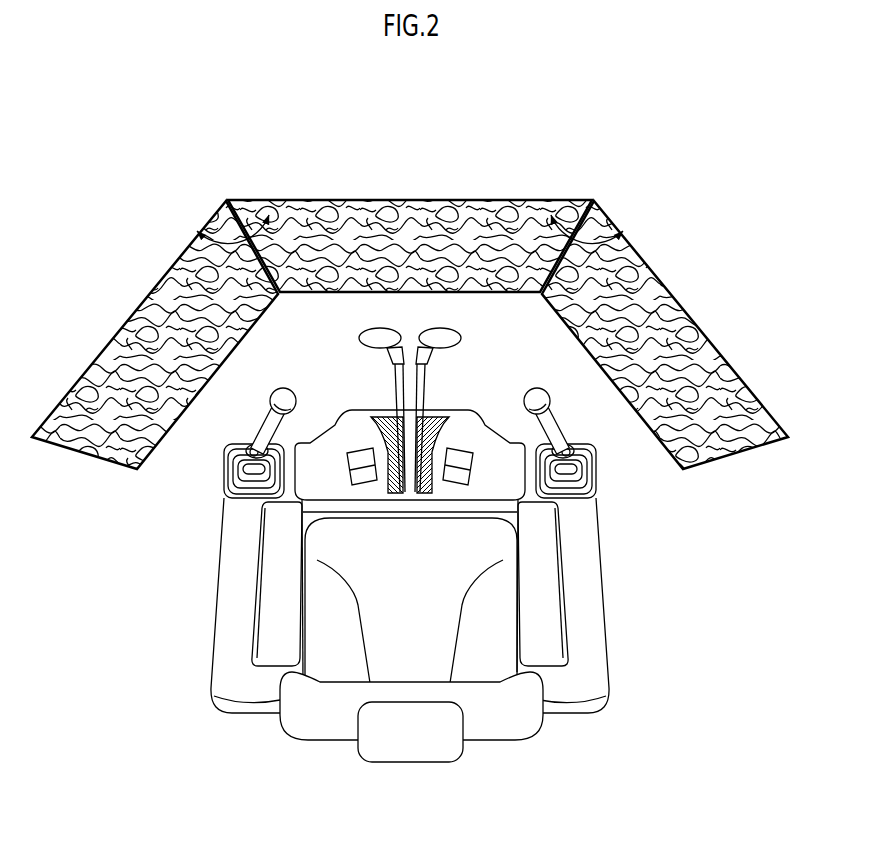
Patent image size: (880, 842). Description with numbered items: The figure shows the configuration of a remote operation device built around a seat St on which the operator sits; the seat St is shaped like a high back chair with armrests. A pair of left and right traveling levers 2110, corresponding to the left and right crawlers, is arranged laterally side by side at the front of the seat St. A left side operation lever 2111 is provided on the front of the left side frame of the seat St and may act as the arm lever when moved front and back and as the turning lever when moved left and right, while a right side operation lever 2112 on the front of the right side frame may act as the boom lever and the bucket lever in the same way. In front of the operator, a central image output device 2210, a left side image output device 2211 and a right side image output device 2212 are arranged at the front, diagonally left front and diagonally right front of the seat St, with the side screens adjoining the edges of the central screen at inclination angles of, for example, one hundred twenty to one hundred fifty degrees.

The central image output device 2210 is at (400, 178).
The left side image output device 2211 is at (133, 304).
The right side image output device 2212 is at (689, 298).
The traveling levers 2110 is at (442, 316).
The left side operation lever 2111 is at (280, 384).
The right side operation lever 2112 is at (540, 384).
The seat St is at (486, 633).